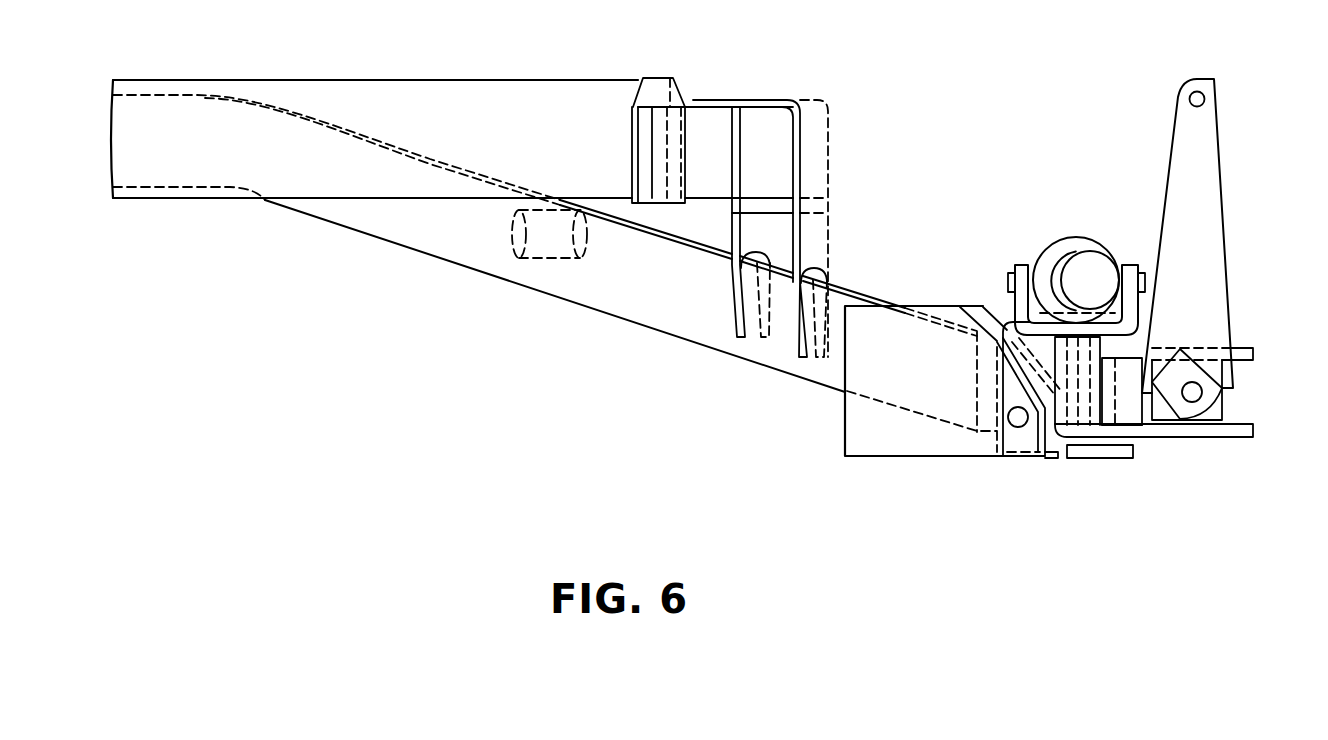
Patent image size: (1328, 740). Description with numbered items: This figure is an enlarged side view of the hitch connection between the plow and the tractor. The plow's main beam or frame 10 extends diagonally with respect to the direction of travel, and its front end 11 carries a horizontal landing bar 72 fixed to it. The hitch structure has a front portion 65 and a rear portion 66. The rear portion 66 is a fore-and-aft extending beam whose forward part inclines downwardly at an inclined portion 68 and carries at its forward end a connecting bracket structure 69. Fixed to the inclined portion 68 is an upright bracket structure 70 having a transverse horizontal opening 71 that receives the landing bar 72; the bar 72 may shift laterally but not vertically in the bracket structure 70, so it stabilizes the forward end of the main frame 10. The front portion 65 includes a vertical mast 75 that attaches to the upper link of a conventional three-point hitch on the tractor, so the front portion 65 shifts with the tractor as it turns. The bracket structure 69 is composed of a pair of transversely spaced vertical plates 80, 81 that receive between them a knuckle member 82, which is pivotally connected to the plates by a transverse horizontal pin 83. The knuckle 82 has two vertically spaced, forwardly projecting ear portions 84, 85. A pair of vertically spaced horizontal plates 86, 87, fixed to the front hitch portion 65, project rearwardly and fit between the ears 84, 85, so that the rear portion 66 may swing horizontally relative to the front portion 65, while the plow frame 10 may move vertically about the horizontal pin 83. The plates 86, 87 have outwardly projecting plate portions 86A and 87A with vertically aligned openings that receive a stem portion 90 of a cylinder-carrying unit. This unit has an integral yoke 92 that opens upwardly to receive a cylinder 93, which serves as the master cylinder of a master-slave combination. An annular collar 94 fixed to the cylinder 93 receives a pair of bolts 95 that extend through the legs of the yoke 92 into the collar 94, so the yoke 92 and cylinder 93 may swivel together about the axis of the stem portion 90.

The main beam 10 is at (487, 98).
The front end 11 is at (481, 201).
The front portion 65 is at (1232, 224).
The rear portion 66 is at (652, 308).
The inclined portion 68 is at (770, 367).
The connecting bracket structure 69 is at (873, 443).
The upright bracket structure 70 is at (817, 120).
The transverse horizontal opening 71 is at (786, 162).
The landing bar 72 is at (716, 117).
The vertical mast 75 is at (1210, 121).
The vertical plate 80 is at (942, 312).
The vertical plate 81 is at (975, 305).
The knuckle member 82 is at (1007, 332).
The transverse horizontal pin 83 is at (1018, 428).
The ear portion 84 is at (1140, 330).
The ear portion 85 is at (1135, 452).
The horizontal plate 86 is at (1253, 353).
The plate portion 86A is at (1123, 357).
The horizontal plate 87 is at (1251, 430).
The plate portion 87A is at (1125, 432).
The stem portion 90 is at (1080, 450).
The yoke 92 is at (1132, 266).
The cylinder 93 is at (1088, 263).
The annular collar 94 is at (1050, 260).
The bolts 95 is at (1008, 280).